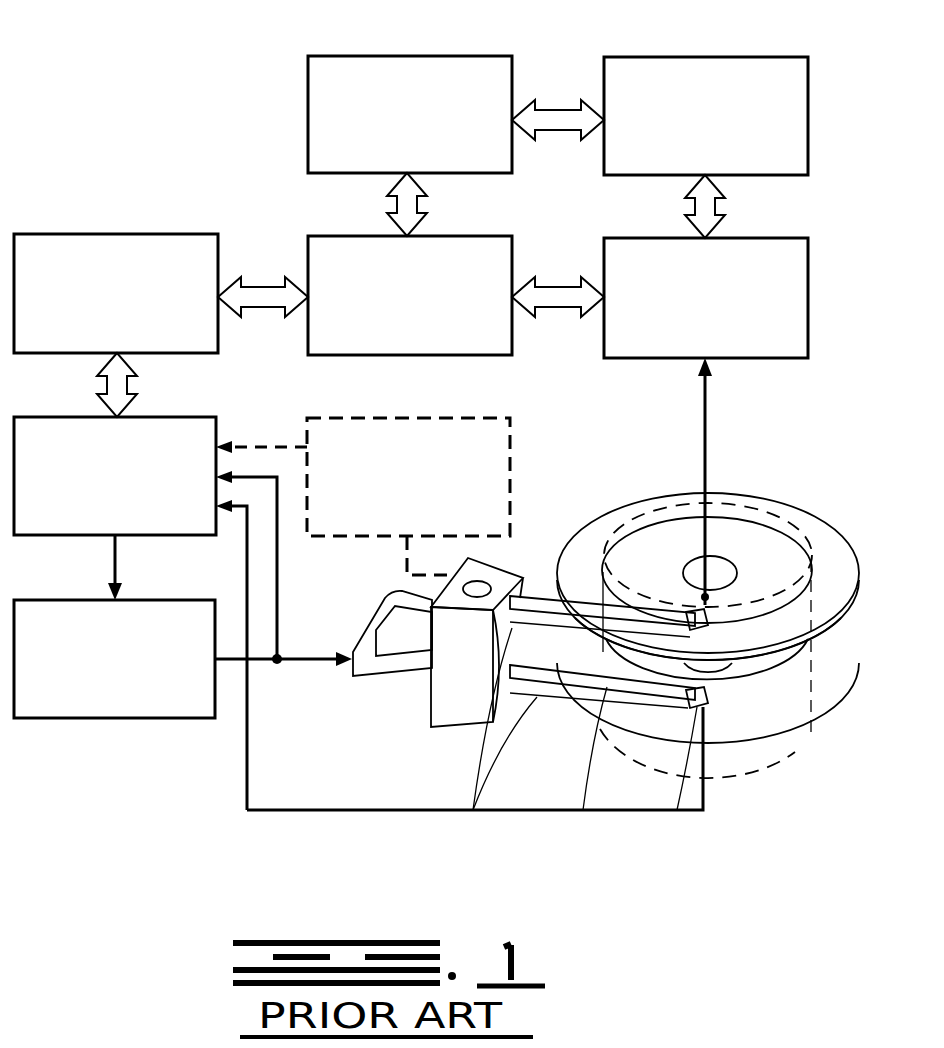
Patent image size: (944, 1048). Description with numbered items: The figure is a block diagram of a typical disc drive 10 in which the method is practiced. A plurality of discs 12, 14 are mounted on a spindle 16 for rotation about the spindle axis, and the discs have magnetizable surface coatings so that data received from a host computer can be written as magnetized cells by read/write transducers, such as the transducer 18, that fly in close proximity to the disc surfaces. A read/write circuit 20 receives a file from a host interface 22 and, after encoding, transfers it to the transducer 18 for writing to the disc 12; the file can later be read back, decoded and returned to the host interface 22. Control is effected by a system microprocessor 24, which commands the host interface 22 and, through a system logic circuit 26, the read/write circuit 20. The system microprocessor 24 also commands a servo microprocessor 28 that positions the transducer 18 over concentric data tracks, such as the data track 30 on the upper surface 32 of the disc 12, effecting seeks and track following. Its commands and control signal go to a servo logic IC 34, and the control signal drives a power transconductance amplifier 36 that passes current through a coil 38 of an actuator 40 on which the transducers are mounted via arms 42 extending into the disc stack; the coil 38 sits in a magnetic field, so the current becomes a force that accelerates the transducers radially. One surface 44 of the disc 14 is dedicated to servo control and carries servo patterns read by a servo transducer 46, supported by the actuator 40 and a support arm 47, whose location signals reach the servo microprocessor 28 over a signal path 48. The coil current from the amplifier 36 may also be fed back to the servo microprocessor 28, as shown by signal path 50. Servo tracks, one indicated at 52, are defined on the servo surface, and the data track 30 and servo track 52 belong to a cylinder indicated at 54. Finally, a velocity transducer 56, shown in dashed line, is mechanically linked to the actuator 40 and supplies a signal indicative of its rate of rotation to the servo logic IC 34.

The disc drive 10 is at (162, 98).
The disc 12 is at (818, 532).
The disc 14 is at (825, 697).
The spindle 16 is at (698, 570).
The read/write transducer 18 is at (697, 613).
The read/write circuit 20 is at (762, 238).
The host interface 22 is at (716, 57).
The system microprocessor 24 is at (418, 56).
The system logic circuit 26 is at (470, 236).
The servo microprocessor 28 is at (130, 234).
The data track 30 is at (732, 497).
The upper surface 32 is at (851, 590).
The servo logic IC 34 is at (170, 417).
The power transconductance amplifier 36 is at (160, 600).
The coil 38 is at (382, 615).
The actuator 40 is at (516, 556).
The arms 42 is at (496, 738).
The servo surface 44 is at (845, 677).
The servo transducer 46 is at (676, 777).
The support arm 47 is at (584, 767).
The signal path 48 is at (372, 814).
The signal path 50 is at (282, 567).
The servo track 52 is at (773, 698).
The cylinder 54 is at (770, 503).
The velocity transducer 56 is at (412, 418).